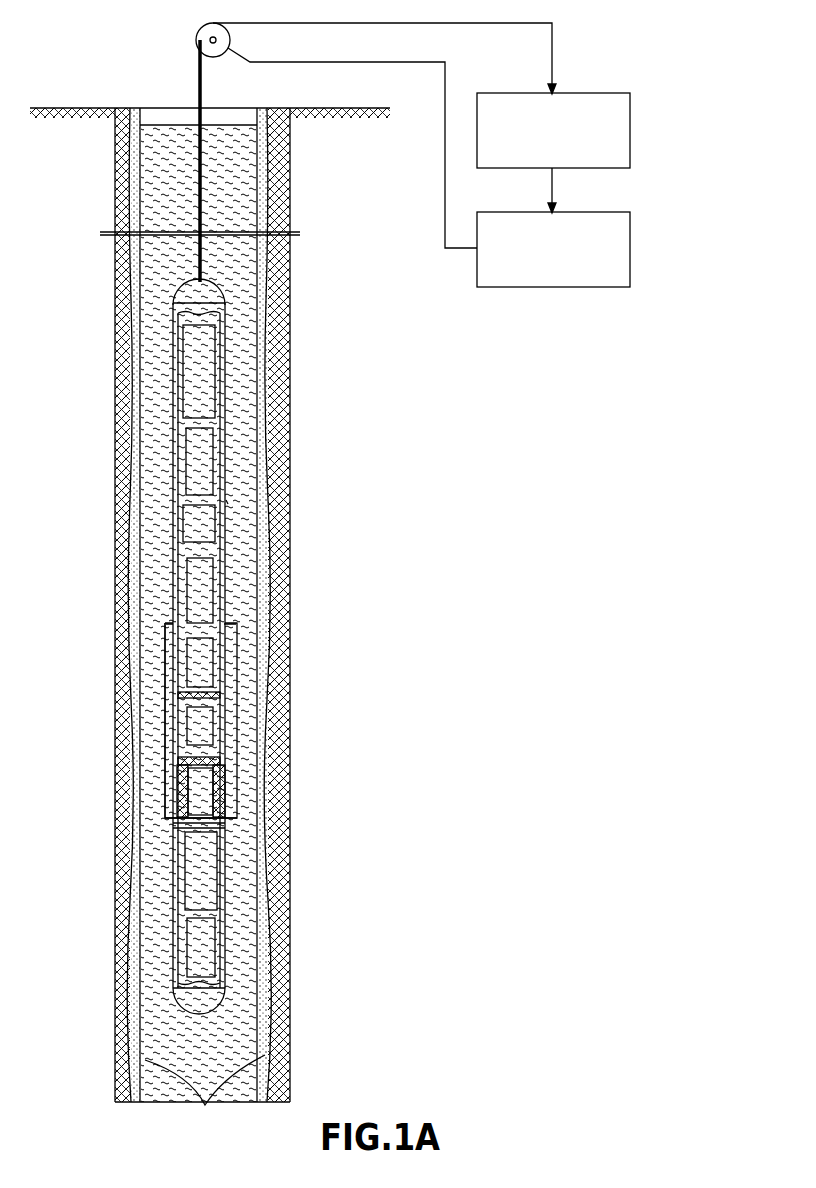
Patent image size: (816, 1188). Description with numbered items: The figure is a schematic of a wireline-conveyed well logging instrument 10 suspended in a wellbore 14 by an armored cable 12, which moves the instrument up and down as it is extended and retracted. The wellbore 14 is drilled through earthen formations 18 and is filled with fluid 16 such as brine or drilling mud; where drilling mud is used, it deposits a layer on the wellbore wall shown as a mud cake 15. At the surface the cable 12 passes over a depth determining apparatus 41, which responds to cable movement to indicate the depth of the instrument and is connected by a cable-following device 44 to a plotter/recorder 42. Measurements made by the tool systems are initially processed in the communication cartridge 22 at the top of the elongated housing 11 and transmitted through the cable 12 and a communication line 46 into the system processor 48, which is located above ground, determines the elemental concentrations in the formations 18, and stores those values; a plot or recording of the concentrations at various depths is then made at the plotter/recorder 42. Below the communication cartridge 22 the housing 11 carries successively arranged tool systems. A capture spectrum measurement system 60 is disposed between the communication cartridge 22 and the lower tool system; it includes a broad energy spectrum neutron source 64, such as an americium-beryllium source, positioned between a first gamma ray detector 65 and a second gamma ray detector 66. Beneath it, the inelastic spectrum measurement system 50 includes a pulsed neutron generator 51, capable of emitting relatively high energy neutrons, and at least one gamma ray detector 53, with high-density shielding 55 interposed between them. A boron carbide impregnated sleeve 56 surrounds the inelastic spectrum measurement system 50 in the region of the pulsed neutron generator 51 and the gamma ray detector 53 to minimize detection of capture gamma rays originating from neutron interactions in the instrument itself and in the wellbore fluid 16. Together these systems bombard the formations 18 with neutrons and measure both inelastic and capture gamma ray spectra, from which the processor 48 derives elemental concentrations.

The well logging instrument 10 is at (165, 535).
The elongated housing 11 is at (228, 503).
The armored cable 12 is at (203, 187).
The wellbore 14 is at (164, 104).
The mud cake 15 is at (205, 1096).
The fluid 16 is at (130, 172).
The earthen formations 18 is at (130, 452).
The communication cartridge 22 is at (190, 363).
The depth determining apparatus 41 is at (200, 30).
The plotter/recorder 42 is at (632, 237).
The cable-following device 44 is at (445, 195).
The communication line 46 is at (553, 56).
The system processor 48 is at (632, 118).
The inelastic spectrum measurement system 50 is at (148, 712).
The pulsed neutron generator 51 is at (193, 778).
The gamma ray detector 53 is at (195, 716).
The high-density shielding 55 is at (183, 760).
The boron carbide impregnated sleeve 56 is at (170, 817).
The capture spectrum measurement system 60 is at (220, 646).
The broad energy spectrum neutron source 64 is at (224, 523).
The first gamma ray detector 65 is at (210, 573).
The second gamma ray detector 66 is at (205, 457).